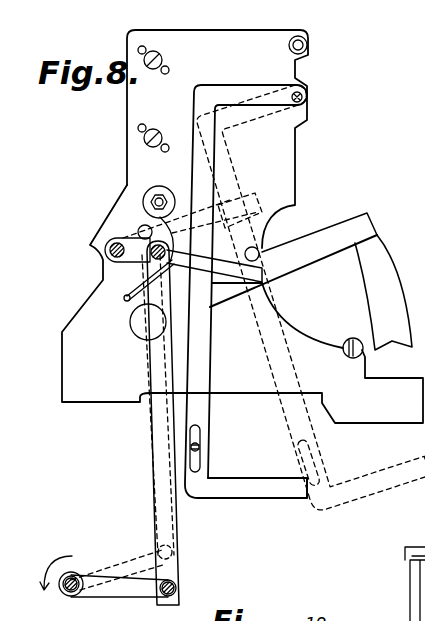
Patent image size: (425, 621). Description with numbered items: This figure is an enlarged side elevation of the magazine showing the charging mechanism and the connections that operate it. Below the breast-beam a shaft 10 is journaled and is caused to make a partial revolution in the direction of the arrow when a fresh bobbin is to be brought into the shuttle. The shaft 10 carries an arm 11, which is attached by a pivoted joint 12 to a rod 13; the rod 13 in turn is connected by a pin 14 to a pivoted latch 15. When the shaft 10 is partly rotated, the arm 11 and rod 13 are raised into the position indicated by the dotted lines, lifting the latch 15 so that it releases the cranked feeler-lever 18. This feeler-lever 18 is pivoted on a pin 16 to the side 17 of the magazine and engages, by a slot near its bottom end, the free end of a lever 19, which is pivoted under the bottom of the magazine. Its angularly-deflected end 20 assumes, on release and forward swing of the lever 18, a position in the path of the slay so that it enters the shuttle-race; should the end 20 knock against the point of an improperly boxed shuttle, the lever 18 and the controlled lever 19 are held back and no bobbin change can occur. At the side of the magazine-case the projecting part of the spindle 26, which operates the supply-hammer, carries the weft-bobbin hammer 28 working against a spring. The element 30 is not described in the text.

The shaft 10 is at (97, 540).
The arm 11 is at (121, 560).
The pivoted joint 12 is at (177, 586).
The rod 13 is at (162, 368).
The pin 14 is at (109, 250).
The pivoted latch 15 is at (184, 212).
The pin 16 is at (303, 97).
The side of the magazine 17 is at (291, 66).
The cranked feeler-lever 18 is at (203, 369).
The lever 19 is at (200, 447).
The angularly-deflected end 20 is at (259, 488).
The spindle 26 is at (132, 321).
The weft-bobbin hammer 28 is at (336, 228).
The cam piece 30 is at (176, 232).